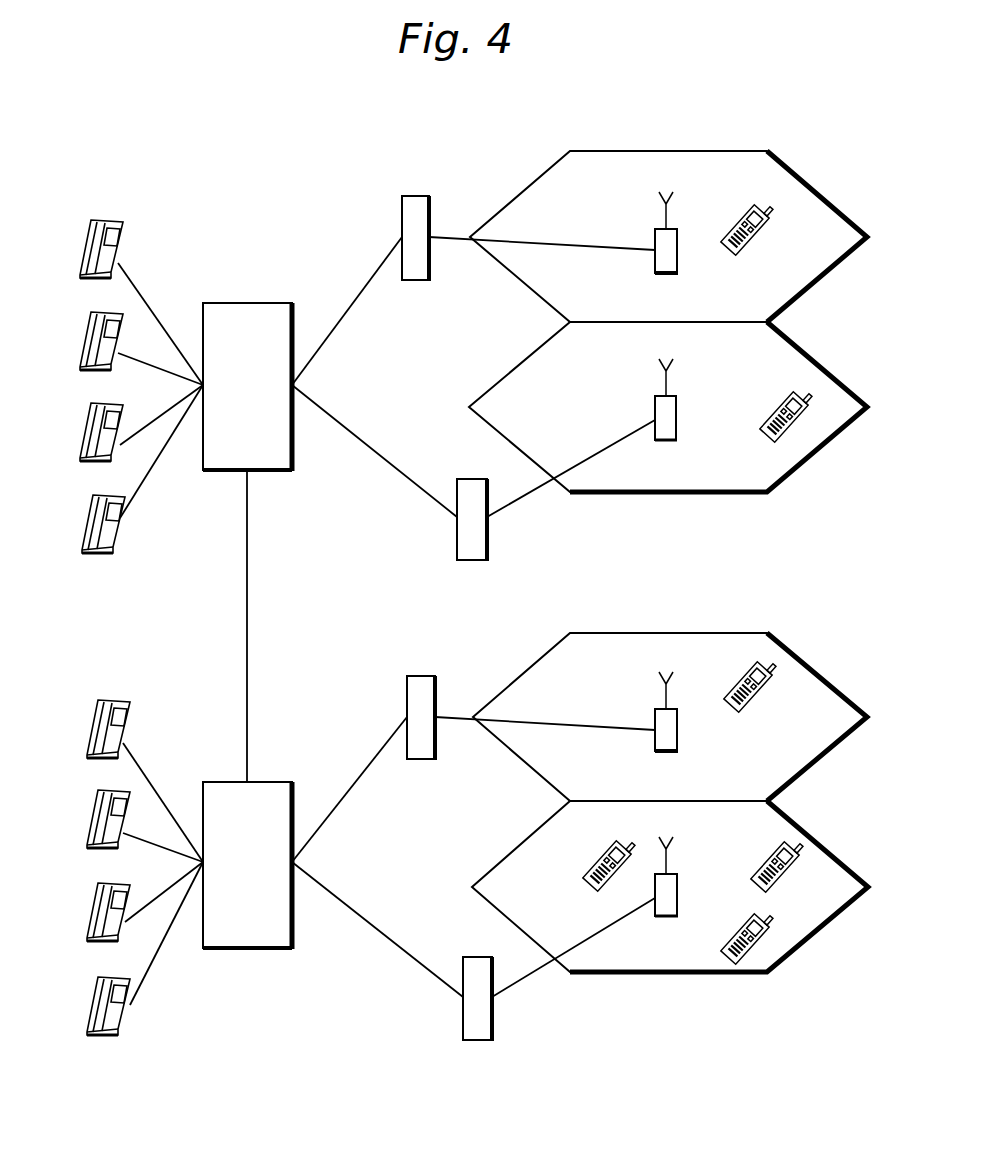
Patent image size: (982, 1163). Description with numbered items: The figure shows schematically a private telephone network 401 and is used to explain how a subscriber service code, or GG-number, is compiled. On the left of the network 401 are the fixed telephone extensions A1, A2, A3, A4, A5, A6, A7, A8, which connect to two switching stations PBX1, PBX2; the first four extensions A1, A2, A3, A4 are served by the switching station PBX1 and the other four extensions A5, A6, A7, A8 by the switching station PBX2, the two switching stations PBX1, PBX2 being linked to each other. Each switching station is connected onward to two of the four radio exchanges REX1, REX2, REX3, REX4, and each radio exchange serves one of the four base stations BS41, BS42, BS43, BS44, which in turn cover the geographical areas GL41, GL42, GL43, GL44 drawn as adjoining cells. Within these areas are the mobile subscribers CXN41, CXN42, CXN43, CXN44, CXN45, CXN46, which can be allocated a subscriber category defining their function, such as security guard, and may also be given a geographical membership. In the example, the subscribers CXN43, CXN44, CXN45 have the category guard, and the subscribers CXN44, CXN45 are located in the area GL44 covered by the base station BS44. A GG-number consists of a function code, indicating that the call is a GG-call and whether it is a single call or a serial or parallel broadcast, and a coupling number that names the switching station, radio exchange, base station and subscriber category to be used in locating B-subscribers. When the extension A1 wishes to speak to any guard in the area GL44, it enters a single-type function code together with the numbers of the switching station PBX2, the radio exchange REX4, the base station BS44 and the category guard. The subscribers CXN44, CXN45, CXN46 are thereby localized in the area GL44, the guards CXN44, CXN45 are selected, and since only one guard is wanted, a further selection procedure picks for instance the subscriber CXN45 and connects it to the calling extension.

The private telephone network 401 is at (187, 140).
The fixed telephone extension A1 is at (86, 246).
The fixed telephone extension A2 is at (85, 337).
The fixed telephone extension A3 is at (85, 428).
The fixed telephone extension A4 is at (85, 521).
The fixed telephone extension A5 is at (88, 726).
The fixed telephone extension A6 is at (88, 818).
The fixed telephone extension A7 is at (88, 910).
The fixed telephone extension A8 is at (88, 1001).
The switching station PBX1 is at (330, 377).
The switching station PBX2 is at (333, 857).
The radio exchange REX1 is at (413, 281).
The radio exchange REX2 is at (467, 561).
The radio exchange REX3 is at (418, 760).
The radio exchange REX4 is at (473, 1041).
The base station BS41 is at (655, 235).
The base station BS42 is at (655, 414).
The base station BS43 is at (655, 718).
The base station BS44 is at (668, 917).
The geographical area GL41 is at (749, 151).
The geographical area GL42 is at (748, 494).
The geographical area GL43 is at (749, 632).
The geographical area GL44 is at (748, 974).
The mobile subscriber CXN41 is at (768, 234).
The mobile subscriber CXN42 is at (778, 407).
The mobile subscriber CXN43 is at (758, 695).
The mobile subscriber CXN44 is at (593, 859).
The mobile subscriber CXN45 is at (741, 923).
The mobile subscriber CXN46 is at (761, 856).